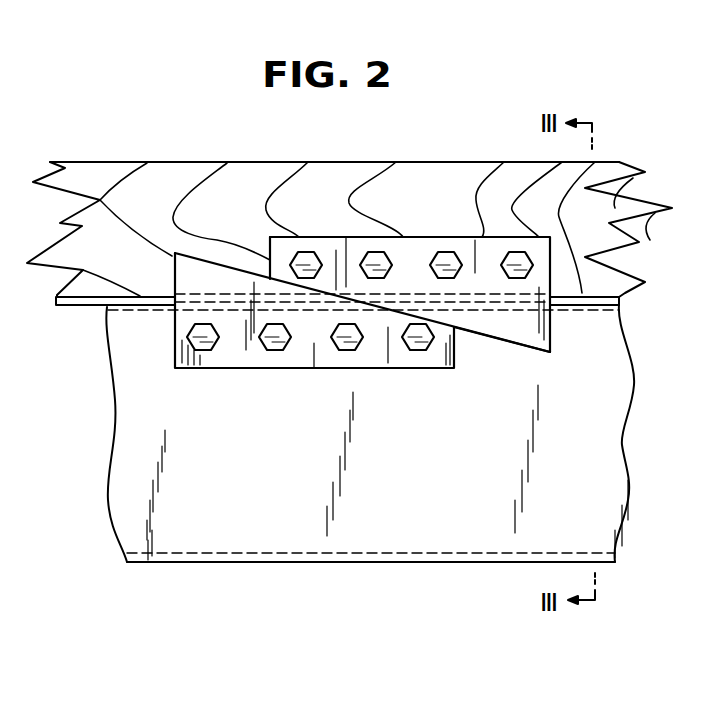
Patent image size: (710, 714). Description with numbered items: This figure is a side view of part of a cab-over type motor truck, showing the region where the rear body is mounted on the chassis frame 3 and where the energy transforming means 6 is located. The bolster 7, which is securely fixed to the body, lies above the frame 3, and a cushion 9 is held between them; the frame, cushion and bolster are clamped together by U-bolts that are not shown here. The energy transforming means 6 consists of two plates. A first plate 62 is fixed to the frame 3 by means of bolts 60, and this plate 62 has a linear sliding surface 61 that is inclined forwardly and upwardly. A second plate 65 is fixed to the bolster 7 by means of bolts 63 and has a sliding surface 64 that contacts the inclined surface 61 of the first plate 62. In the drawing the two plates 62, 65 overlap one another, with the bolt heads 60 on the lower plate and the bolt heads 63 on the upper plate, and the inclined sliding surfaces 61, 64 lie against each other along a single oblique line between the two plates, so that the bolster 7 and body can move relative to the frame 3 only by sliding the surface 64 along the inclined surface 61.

The chassis frame 3 is at (120, 512).
The energy transforming means 6 is at (362, 313).
The bolster 7 is at (474, 192).
The cushion 9 is at (86, 303).
The bolts 60 is at (203, 346).
The linear sliding surface 61 is at (223, 267).
The plate 62 is at (300, 345).
The bolts 63 is at (306, 250).
The sliding surface 64 is at (484, 333).
The plate 65 is at (430, 252).